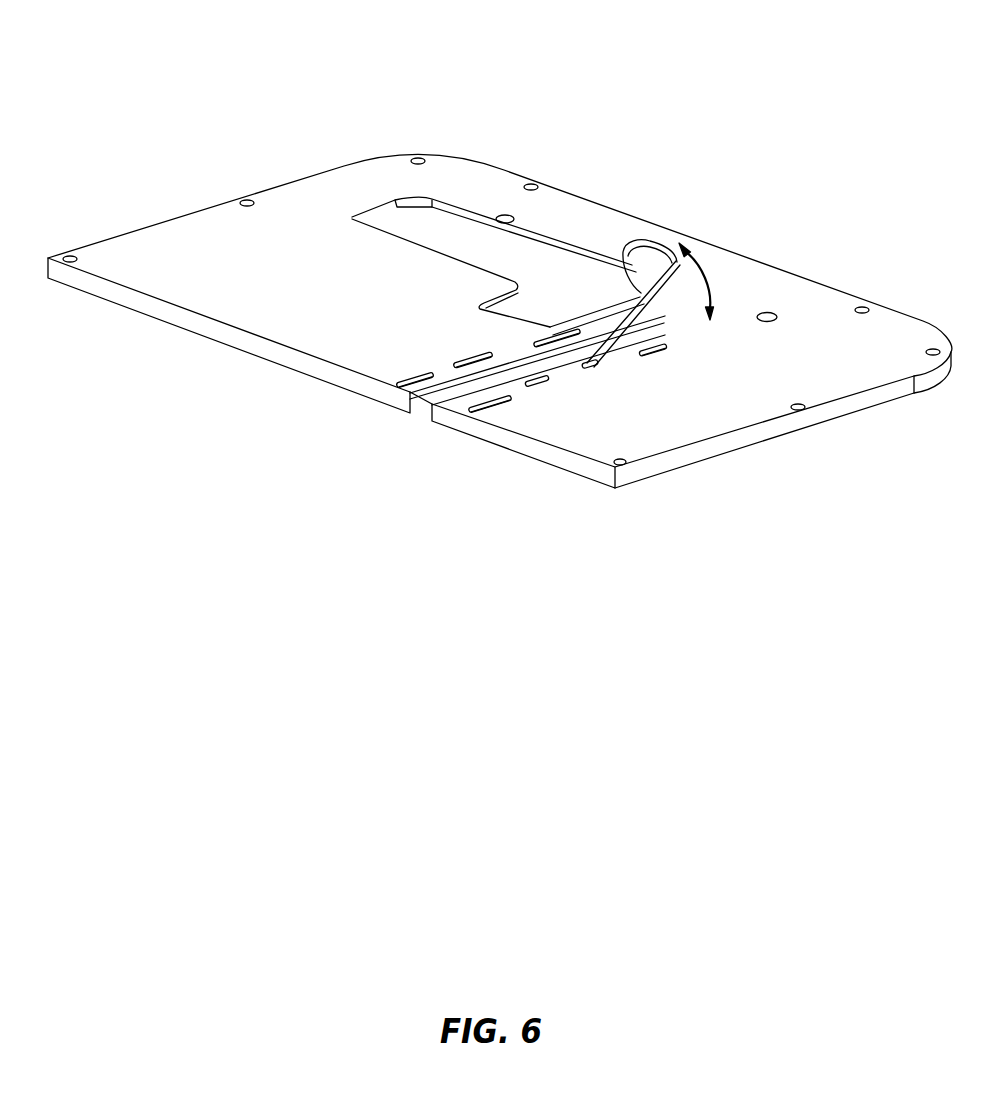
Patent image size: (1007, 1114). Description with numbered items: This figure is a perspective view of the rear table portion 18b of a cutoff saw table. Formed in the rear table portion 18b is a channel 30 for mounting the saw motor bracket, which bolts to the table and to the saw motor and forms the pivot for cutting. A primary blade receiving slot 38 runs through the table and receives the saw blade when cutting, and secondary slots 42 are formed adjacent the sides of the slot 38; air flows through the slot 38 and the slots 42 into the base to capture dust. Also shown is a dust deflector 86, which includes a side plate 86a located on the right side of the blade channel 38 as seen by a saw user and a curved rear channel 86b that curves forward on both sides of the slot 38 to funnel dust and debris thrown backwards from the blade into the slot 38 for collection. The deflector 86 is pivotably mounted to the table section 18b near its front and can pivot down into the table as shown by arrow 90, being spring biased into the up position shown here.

The rear section of the table 18b is at (331, 285).
The channel 30 is at (475, 243).
The blade receiving slot 38 is at (456, 395).
The secondary slots 42 is at (522, 392).
The dust deflector 86 is at (670, 308).
The side plate 86a is at (651, 330).
The curved rear channel 86b is at (651, 258).
The arrow 90 is at (696, 266).